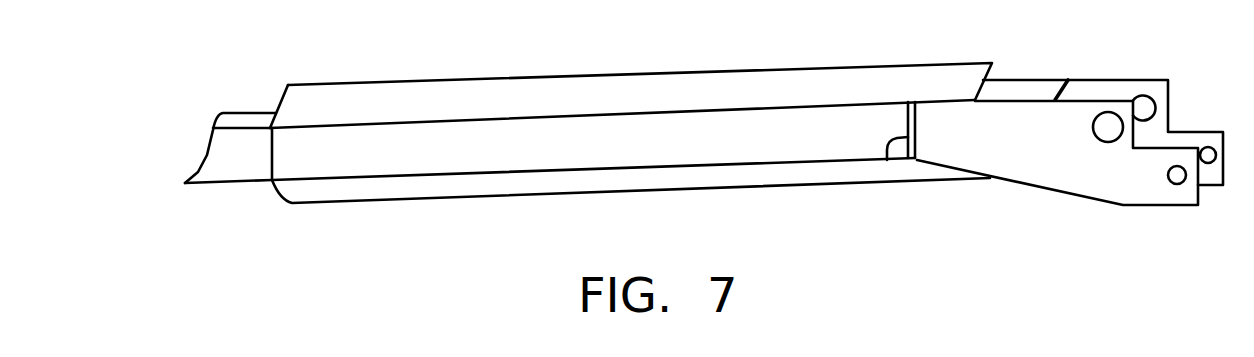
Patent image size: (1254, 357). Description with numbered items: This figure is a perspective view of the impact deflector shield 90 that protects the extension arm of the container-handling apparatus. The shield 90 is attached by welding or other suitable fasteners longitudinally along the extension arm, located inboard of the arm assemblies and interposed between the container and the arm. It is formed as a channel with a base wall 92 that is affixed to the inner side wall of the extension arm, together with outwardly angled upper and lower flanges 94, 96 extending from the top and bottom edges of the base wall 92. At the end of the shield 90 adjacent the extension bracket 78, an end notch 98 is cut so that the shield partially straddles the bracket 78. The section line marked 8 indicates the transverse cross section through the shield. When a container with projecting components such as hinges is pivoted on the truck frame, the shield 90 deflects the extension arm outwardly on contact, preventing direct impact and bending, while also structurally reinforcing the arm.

The section line 8- 8 is at (250, 88).
The extension bracket 78 is at (1063, 172).
The impact deflector shield 90 is at (715, 70).
The base wall 92 is at (500, 160).
The upper flange 94 is at (875, 78).
The lower flange 96 is at (728, 182).
The end notch 98 is at (887, 160).